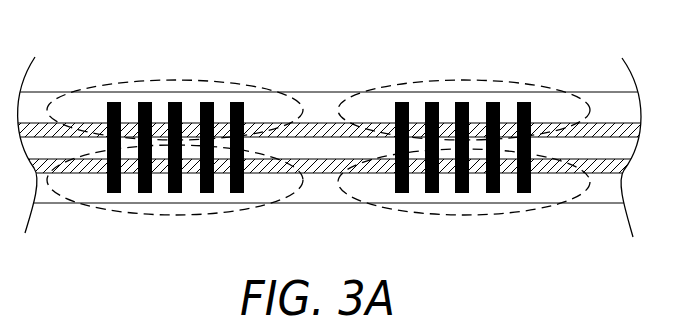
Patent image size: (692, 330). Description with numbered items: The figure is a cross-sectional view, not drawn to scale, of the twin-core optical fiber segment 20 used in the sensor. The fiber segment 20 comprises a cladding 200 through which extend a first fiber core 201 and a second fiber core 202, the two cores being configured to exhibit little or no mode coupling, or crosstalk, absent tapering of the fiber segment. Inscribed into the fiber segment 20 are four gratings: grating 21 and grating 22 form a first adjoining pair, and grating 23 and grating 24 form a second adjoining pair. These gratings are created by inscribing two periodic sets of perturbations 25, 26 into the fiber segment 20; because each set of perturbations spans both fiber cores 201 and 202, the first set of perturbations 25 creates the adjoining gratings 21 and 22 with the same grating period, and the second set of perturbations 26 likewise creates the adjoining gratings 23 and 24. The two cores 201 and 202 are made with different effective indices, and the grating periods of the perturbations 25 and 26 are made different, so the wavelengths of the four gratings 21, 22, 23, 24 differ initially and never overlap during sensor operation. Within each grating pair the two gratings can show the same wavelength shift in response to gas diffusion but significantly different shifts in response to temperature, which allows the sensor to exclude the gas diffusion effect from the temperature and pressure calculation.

The twin-core optical fiber segment 20 is at (332, 26).
The grating 1 21 is at (258, 88).
The grating 2 22 is at (268, 210).
The grating 3 23 is at (548, 87).
The grating 4 24 is at (548, 207).
The first set of periodic perturbations 25 is at (107, 193).
The second set of periodic perturbations 26 is at (387, 206).
The cladding 200 is at (631, 105).
The first fiber core 201 is at (634, 131).
The second fiber core 202 is at (625, 172).